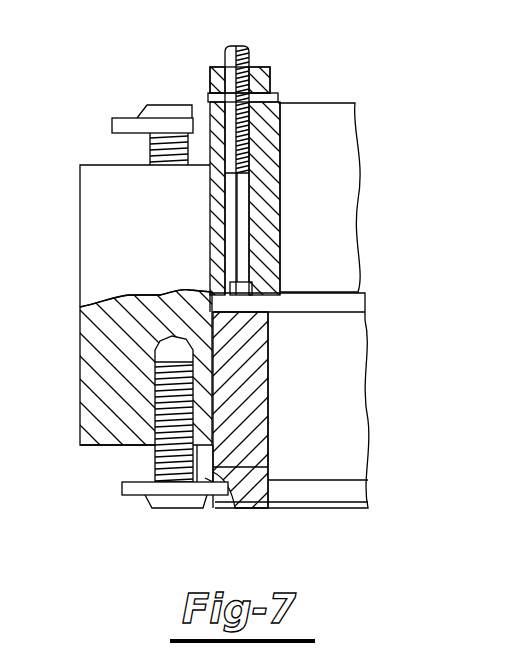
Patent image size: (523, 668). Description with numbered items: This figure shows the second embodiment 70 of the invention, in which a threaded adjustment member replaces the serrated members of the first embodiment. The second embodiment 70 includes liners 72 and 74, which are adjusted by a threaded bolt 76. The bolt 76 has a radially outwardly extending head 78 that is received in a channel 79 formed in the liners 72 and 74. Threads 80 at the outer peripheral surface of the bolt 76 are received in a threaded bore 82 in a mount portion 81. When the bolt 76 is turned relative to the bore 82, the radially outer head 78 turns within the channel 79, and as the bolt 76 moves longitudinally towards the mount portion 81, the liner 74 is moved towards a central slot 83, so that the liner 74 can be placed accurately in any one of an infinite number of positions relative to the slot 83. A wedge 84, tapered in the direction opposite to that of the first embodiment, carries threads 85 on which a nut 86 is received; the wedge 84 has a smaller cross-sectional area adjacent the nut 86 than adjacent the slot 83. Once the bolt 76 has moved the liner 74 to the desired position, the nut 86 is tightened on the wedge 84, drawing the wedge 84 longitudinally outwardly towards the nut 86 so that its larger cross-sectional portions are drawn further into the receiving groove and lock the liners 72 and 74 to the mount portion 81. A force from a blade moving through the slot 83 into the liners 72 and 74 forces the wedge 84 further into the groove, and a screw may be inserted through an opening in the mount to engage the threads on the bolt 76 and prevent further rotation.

The second embodiment 70 is at (400, 386).
The liner 72 is at (266, 220).
The liner 74 is at (257, 443).
The threaded bolt 76 is at (147, 107).
The head 78 is at (222, 495).
The channel 79 is at (216, 481).
The threads 80 is at (150, 463).
The mount portion 81 is at (103, 418).
The threaded bore 82 is at (160, 388).
The central slot 83 is at (338, 302).
The wedge 84 is at (225, 230).
The threads 85 is at (246, 52).
The nut 86 is at (268, 75).